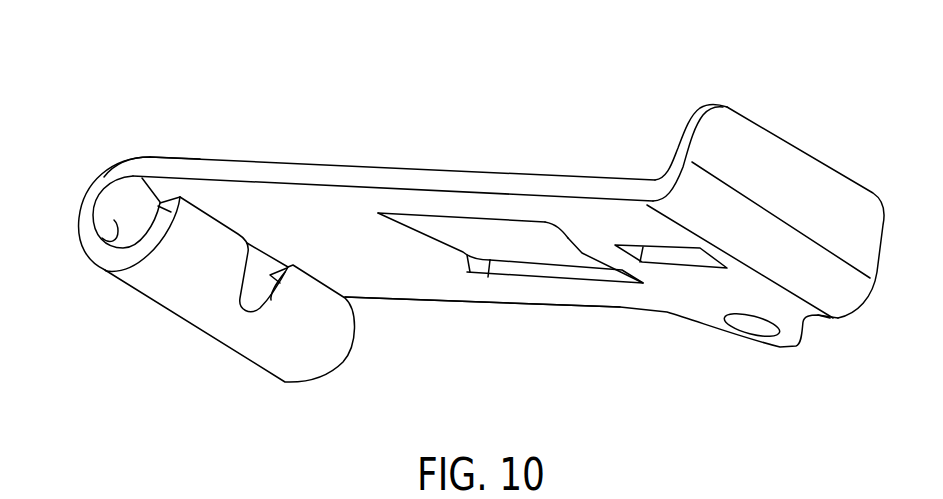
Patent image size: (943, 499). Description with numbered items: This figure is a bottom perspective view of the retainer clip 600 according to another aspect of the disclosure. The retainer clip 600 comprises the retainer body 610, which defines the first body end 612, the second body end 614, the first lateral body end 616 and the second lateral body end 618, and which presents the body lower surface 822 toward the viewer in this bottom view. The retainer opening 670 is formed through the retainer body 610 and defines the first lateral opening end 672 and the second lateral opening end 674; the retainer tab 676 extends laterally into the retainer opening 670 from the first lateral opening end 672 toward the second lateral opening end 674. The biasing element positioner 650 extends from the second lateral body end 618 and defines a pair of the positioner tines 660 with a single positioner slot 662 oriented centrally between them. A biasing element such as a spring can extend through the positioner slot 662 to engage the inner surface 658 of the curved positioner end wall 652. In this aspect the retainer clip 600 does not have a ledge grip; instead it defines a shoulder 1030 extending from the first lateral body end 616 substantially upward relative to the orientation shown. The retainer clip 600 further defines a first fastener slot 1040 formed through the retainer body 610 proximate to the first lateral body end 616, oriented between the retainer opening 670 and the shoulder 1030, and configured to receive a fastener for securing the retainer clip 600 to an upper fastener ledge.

The retainer clip 600 is at (212, 97).
The second lateral body end 618 is at (150, 155).
The first body end 612 is at (300, 168).
The retainer body 610 is at (356, 184).
The curved positioner end wall 652 is at (94, 198).
The inner surface 658 is at (102, 237).
The biasing element positioner 650 is at (83, 268).
The positioner tines 660 is at (198, 236).
The positioner slot 662 is at (253, 288).
The second body end 614 is at (433, 303).
The body lower surface 822 is at (363, 266).
The second lateral opening end 674 is at (420, 235).
The retainer opening 670 is at (520, 243).
The first lateral opening end 672 is at (581, 239).
The retainer tab 676 is at (583, 255).
The first fastener slot 1040 is at (664, 256).
The shoulder 1030 is at (757, 150).
The first lateral body end 616 is at (830, 318).